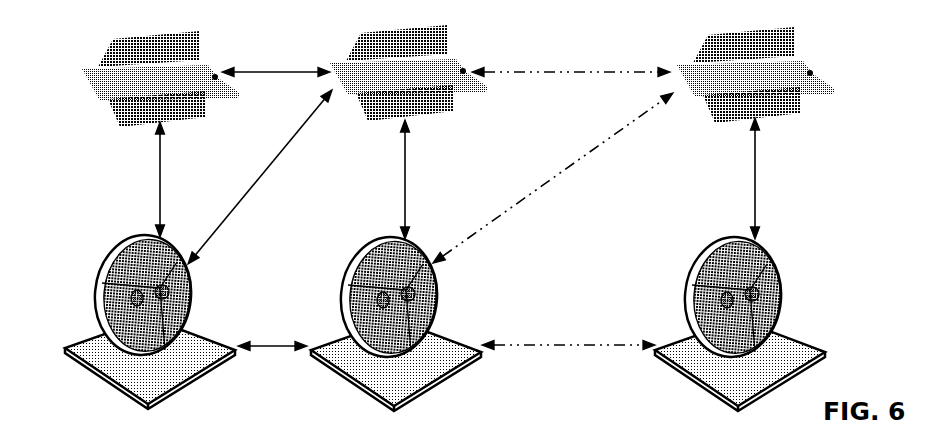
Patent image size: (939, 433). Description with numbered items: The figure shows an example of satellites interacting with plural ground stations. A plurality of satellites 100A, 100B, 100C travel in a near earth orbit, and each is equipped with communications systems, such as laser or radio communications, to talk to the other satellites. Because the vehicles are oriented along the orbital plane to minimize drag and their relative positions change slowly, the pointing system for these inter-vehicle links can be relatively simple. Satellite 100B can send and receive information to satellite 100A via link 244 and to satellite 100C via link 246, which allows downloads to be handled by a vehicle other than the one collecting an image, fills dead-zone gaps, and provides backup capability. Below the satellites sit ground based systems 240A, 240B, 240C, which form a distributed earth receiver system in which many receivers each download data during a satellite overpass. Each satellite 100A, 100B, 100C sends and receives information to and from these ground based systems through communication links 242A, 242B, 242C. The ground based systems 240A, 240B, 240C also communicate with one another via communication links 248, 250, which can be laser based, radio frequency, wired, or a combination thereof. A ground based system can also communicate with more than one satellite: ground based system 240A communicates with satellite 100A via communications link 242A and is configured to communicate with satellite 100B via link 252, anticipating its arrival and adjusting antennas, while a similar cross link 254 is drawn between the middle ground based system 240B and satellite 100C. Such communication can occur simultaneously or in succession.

The satellite 100A is at (97, 66).
The satellite 100B is at (350, 63).
The satellite 100C is at (692, 62).
The ground based system 240A is at (97, 333).
The ground based system 240B is at (343, 332).
The ground based system 240C is at (686, 330).
The communication link 242A is at (158, 188).
The communication link 242B is at (403, 188).
The communication link 242C is at (753, 188).
The link 244 is at (278, 70).
The link 246 is at (575, 71).
The communication link 248 is at (272, 352).
The communication link 250 is at (557, 351).
The link 252 is at (255, 183).
The cross-link between satellite and ground station (intermittent) 254 is at (541, 186).